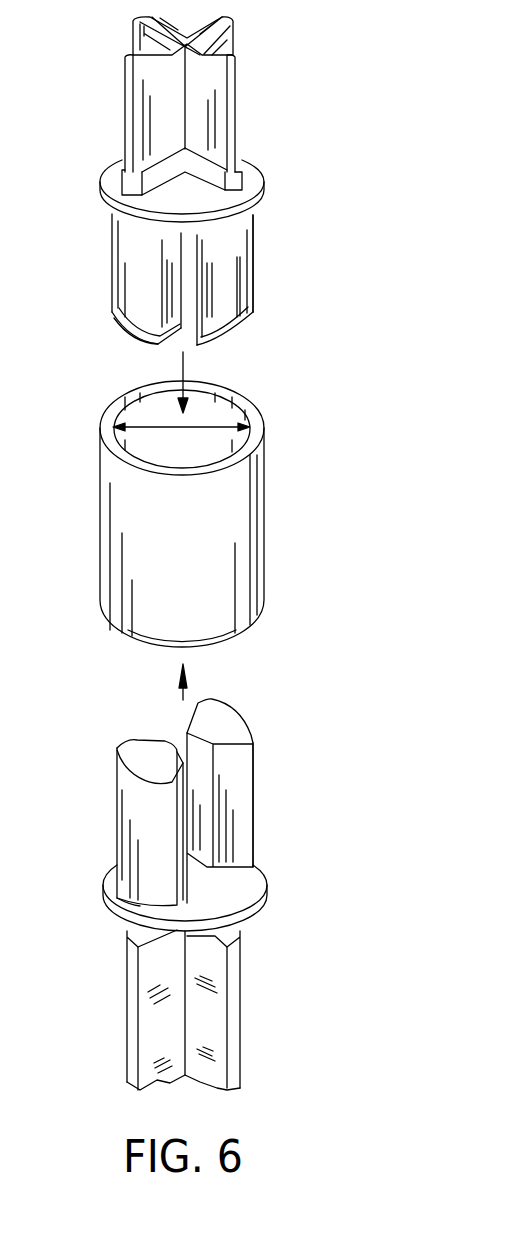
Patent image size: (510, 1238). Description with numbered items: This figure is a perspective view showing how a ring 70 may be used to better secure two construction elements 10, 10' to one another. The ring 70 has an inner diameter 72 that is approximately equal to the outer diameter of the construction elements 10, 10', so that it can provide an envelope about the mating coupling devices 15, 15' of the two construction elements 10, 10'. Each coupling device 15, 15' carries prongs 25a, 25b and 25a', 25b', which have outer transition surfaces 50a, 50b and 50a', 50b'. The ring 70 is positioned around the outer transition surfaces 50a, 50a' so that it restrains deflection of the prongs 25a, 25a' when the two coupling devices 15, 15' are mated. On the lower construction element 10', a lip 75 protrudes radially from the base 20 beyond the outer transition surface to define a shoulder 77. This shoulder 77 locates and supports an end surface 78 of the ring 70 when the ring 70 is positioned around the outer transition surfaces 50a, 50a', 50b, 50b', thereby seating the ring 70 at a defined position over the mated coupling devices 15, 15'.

The construction element 10 is at (190, 181).
The prong 25a is at (275, 268).
The outer transition surface 50a is at (293, 276).
The coupling device 15' is at (297, 277).
The prong 25b is at (104, 279).
The outer transition surface 50b is at (92, 325).
The inner diameter 72 is at (199, 425).
The ring 70 is at (203, 532).
The end surface 78 is at (140, 644).
The prong 25a' is at (270, 777).
The outer transition surface 50a' is at (270, 724).
The coupling device 15 is at (298, 805).
The prong 25b' is at (101, 827).
The outer transition surface 50b' is at (101, 767).
The construction element 10' is at (190, 870).
The base 20 is at (233, 890).
The lip 75 is at (127, 894).
The shoulder 77 is at (177, 930).